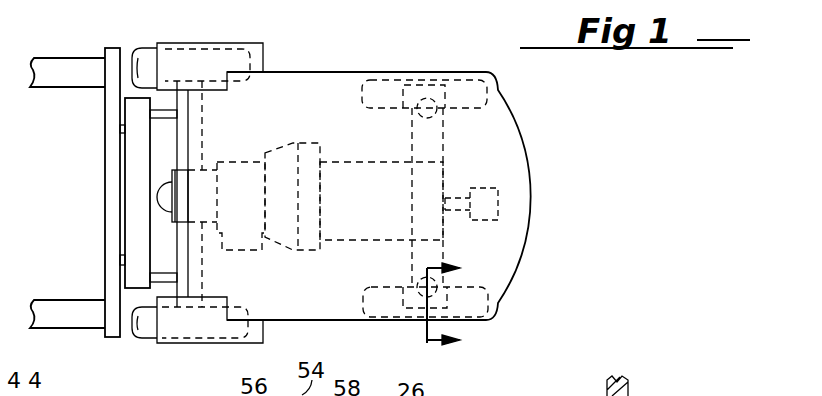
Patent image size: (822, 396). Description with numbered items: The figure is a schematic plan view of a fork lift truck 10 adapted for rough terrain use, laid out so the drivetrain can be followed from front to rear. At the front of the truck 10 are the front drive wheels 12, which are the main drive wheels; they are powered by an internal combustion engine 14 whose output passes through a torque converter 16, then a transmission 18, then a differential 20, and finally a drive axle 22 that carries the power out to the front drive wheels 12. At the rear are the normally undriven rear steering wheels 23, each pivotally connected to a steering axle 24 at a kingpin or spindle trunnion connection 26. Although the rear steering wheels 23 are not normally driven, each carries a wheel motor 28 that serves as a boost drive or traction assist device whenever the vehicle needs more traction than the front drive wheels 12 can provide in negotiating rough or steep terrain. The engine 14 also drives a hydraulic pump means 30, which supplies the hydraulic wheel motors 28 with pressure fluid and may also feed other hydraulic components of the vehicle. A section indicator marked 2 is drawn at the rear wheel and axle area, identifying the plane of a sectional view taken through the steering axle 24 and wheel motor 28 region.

The fork lift truck 10 is at (519, 262).
The front drive wheels 12 is at (133, 330).
The internal combustion engine 14 is at (343, 162).
The torque converter 16 is at (303, 143).
The transmission 18 is at (243, 162).
The differential 20 is at (167, 170).
The drive axle 22 is at (203, 265).
The rear steering wheels 23 is at (472, 322).
The steering axle 24 is at (443, 252).
The kingpin or spindle trunnion connection 26 is at (463, 287).
The wheel motor 28 is at (447, 103).
The hydraulic pump means 30 is at (485, 188).
The section line 2- 2 is at (438, 308).